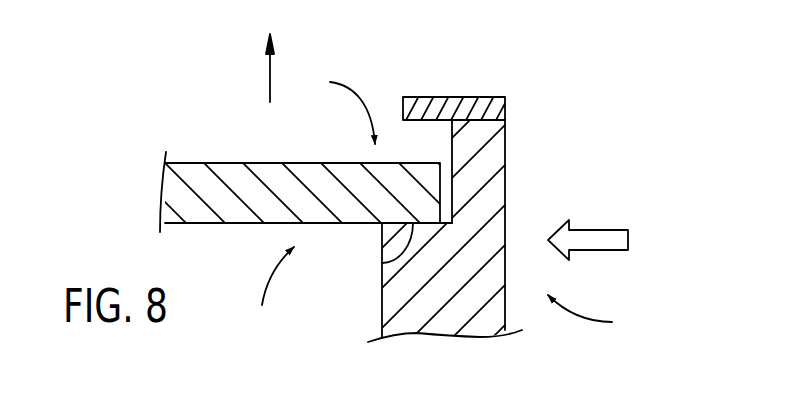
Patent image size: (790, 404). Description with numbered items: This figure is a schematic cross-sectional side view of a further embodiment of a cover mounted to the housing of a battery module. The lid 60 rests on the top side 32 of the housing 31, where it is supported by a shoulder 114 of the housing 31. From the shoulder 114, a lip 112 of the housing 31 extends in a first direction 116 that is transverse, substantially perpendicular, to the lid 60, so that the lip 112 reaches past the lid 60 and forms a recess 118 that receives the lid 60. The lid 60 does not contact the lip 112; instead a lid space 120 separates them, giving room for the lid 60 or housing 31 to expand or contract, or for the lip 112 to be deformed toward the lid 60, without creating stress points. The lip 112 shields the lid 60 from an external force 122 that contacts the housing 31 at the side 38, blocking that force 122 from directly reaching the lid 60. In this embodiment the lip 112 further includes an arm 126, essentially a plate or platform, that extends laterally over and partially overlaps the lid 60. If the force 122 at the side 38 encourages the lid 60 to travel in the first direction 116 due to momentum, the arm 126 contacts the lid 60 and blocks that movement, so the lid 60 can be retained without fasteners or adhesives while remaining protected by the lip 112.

The lid 60 is at (227, 162).
The lip 112 is at (505, 147).
The arm 126 is at (445, 97).
The housing 31 is at (477, 338).
The shoulder 114 is at (383, 262).
The lid space 120 is at (446, 159).
The first direction 116 is at (268, 72).
The recess 118 is at (336, 107).
The top side 32 is at (271, 291).
The side 38 is at (594, 315).
The force 122 is at (600, 230).